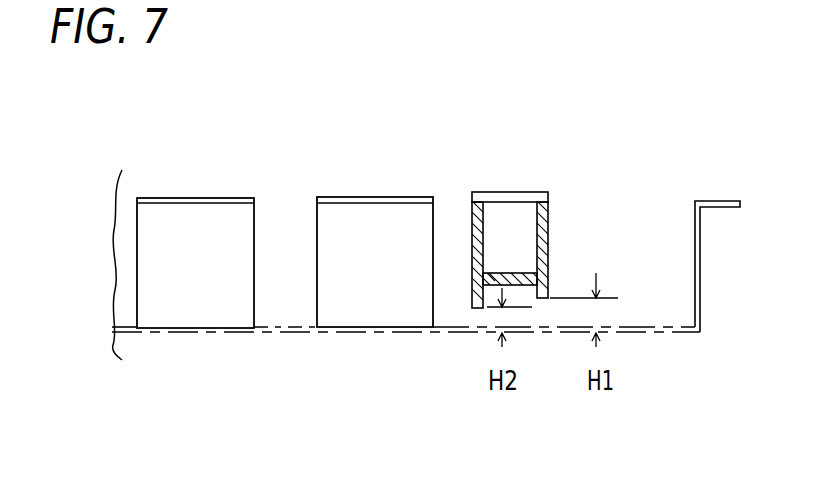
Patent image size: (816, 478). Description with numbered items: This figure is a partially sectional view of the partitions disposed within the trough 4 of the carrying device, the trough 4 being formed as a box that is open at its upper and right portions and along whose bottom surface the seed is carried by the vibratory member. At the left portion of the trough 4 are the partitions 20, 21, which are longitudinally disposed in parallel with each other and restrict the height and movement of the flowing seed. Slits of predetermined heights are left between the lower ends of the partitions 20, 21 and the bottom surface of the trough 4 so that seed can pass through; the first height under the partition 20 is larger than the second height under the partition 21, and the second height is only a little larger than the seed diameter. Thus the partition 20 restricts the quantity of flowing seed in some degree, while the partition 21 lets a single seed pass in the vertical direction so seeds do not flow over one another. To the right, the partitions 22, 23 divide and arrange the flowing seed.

The partition 23 is at (254, 226).
The partition 22 is at (433, 217).
The partition 21 is at (470, 307).
The partition 20 is at (548, 288).
The trough 4 is at (695, 201).